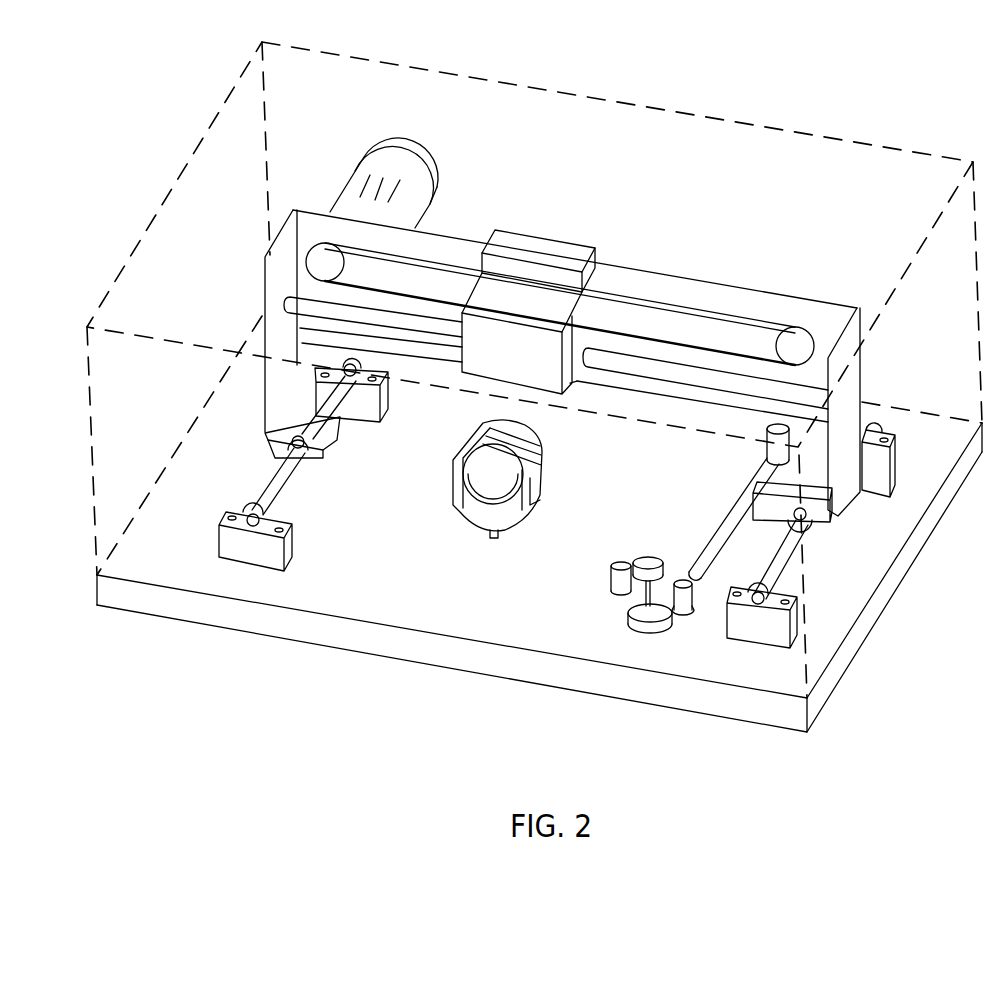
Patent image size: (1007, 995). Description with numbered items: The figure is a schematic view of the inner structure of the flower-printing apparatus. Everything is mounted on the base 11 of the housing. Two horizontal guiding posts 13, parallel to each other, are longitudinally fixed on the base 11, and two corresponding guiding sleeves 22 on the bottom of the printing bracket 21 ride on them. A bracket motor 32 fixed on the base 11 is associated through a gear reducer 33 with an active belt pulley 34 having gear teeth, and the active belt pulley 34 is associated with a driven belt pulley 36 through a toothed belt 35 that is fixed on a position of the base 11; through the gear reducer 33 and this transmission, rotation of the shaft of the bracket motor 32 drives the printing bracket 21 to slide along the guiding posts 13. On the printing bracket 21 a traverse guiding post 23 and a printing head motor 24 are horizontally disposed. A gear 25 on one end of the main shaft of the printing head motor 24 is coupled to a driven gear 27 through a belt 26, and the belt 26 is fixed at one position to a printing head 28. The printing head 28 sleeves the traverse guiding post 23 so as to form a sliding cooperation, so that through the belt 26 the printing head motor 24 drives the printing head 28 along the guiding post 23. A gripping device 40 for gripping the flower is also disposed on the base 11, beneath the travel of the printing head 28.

The base 11 is at (897, 565).
The horizontal guiding posts 13 is at (270, 487).
The printing bracket 21 is at (690, 377).
The guiding sleeves 22 is at (320, 458).
The traverse guiding post 23 is at (790, 330).
The printing head motor 24 is at (408, 155).
The gear 25 is at (322, 262).
The belt 26 is at (450, 252).
The driven gear 27 is at (817, 420).
The printing head 28 is at (545, 245).
The bracket motor 32 is at (612, 578).
The gear reducer 33 is at (657, 613).
The active belt pulley 34 is at (685, 615).
The toothed belt 35 is at (700, 565).
The driven belt pulley 36 is at (770, 437).
The gripping device 40 is at (466, 510).